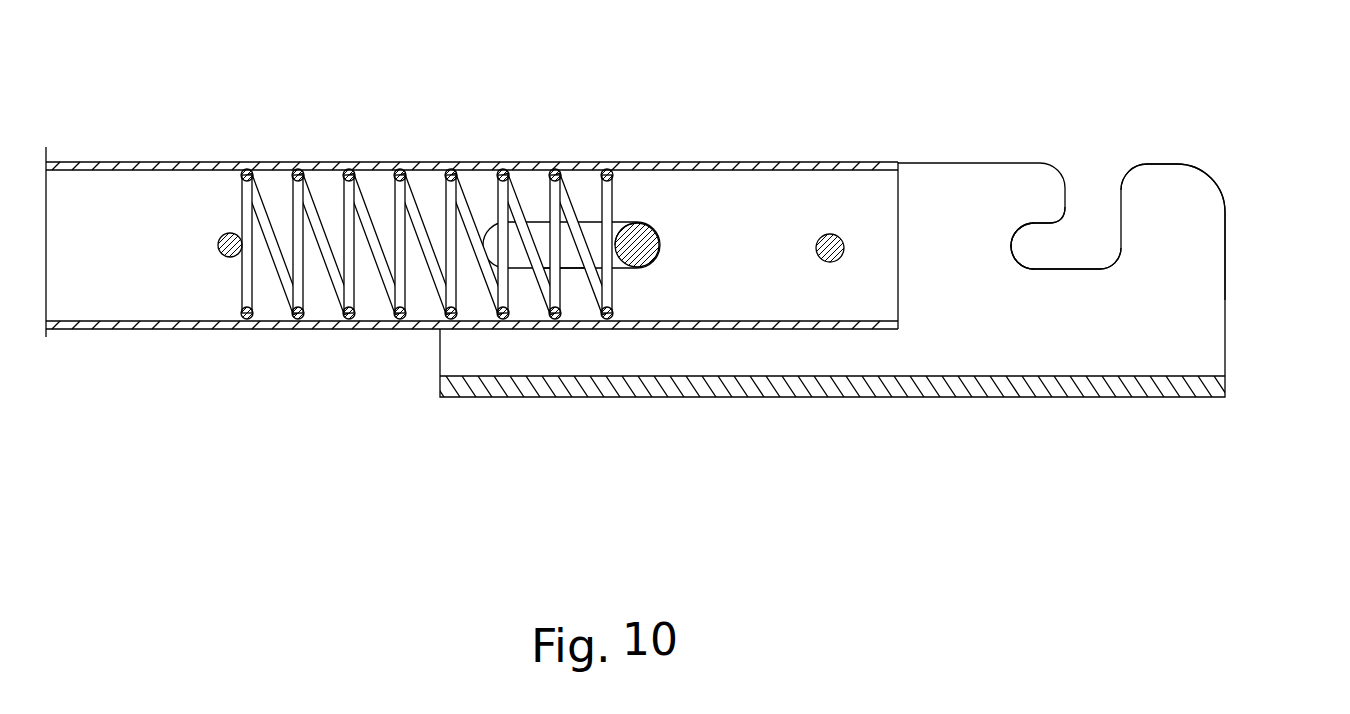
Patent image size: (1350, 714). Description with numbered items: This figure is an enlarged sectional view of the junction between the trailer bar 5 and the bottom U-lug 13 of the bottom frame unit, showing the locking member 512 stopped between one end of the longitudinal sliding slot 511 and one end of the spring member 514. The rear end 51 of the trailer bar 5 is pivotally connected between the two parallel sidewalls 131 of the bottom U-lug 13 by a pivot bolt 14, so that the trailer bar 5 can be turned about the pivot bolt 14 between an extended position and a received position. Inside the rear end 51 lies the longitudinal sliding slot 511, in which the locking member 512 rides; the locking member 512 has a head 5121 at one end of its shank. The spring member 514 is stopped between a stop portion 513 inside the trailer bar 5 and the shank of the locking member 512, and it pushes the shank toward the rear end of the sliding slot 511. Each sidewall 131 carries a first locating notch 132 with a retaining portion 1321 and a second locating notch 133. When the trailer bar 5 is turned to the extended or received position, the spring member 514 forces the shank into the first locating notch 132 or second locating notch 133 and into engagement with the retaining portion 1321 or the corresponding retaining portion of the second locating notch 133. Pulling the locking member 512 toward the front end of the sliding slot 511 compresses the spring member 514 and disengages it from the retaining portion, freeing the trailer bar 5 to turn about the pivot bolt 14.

The trailer bar 5 is at (472, 181).
The rear end 51 is at (175, 162).
The longitudinal sliding slot 511 is at (536, 222).
The locking member 512 is at (658, 237).
The head 5121 is at (638, 232).
The stop portion 513 is at (230, 232).
The spring member 514 is at (589, 215).
The bottom U-lug 13 is at (1226, 331).
The sidewall 131 is at (1227, 247).
The first locating notch 132 is at (1077, 270).
The retaining portion 1321 is at (1043, 225).
The second locating notch 133 is at (566, 262).
The pivot bolt 14 is at (840, 234).